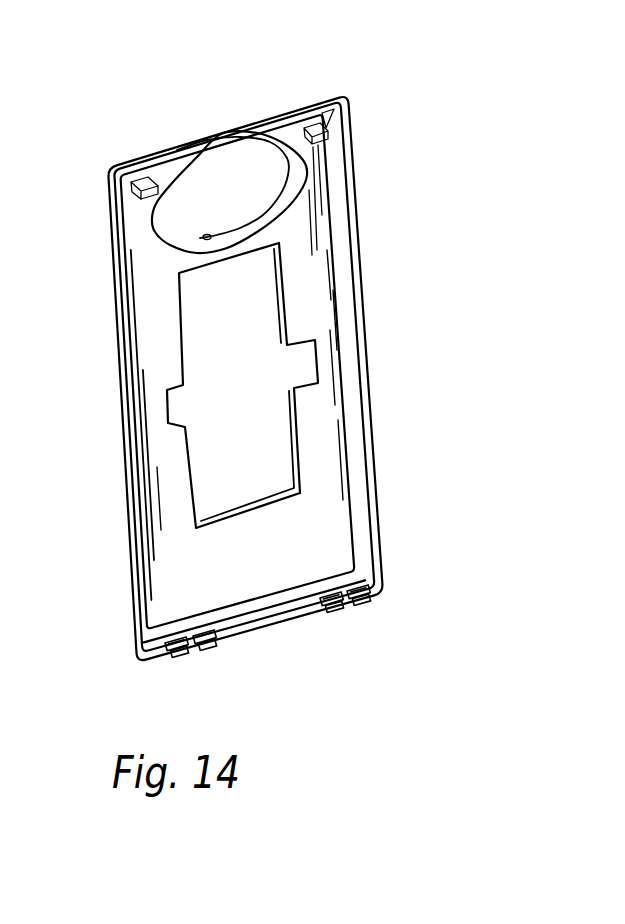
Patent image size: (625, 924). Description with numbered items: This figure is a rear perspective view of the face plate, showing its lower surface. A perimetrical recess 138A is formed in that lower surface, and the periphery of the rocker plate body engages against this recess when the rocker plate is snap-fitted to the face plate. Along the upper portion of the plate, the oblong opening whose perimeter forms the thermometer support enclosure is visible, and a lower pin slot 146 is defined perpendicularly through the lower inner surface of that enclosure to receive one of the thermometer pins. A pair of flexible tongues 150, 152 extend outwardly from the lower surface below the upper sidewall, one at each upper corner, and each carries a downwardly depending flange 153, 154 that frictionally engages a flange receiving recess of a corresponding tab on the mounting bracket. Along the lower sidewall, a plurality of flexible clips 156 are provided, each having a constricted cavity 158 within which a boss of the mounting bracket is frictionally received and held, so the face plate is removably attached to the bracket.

The perimetrical recess 138A is at (300, 427).
The lower pin slot 146 is at (209, 234).
The flexible tongue 150 is at (320, 123).
The flexible tongue 152 is at (142, 180).
The downwardly depending flange 153 is at (323, 152).
The downwardly depending flange 154 is at (140, 193).
The flexible clips 156 is at (357, 583).
The constricted cavity 158 is at (213, 663).